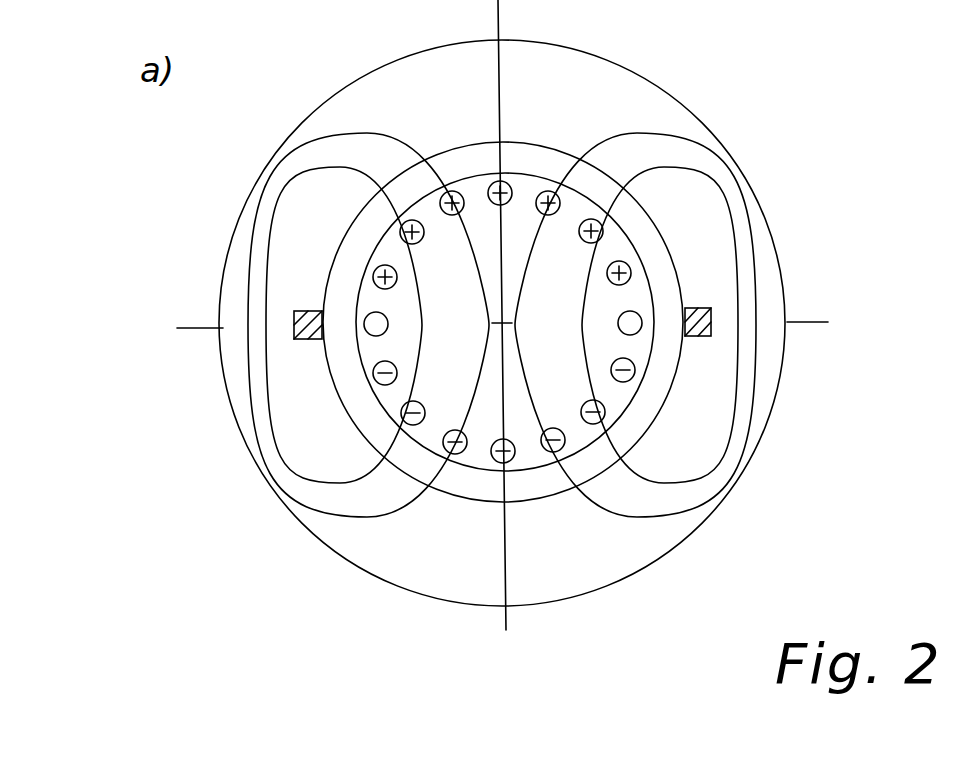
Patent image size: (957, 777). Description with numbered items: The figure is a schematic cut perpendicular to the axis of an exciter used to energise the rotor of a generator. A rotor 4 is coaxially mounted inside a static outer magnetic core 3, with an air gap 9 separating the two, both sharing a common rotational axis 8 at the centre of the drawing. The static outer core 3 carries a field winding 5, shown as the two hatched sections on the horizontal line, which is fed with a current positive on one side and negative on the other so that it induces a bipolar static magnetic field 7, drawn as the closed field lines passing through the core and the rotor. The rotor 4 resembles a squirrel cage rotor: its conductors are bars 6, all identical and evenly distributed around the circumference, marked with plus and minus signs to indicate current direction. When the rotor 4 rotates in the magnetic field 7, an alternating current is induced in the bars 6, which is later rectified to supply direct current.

The static outer magnetic core 3 is at (633, 107).
The rotor 4 is at (528, 188).
The field winding 5 is at (708, 320).
The bars 6 is at (503, 205).
The magnetic field 7 is at (697, 152).
The rotational axis 8 is at (505, 325).
The air gap 9 is at (657, 385).